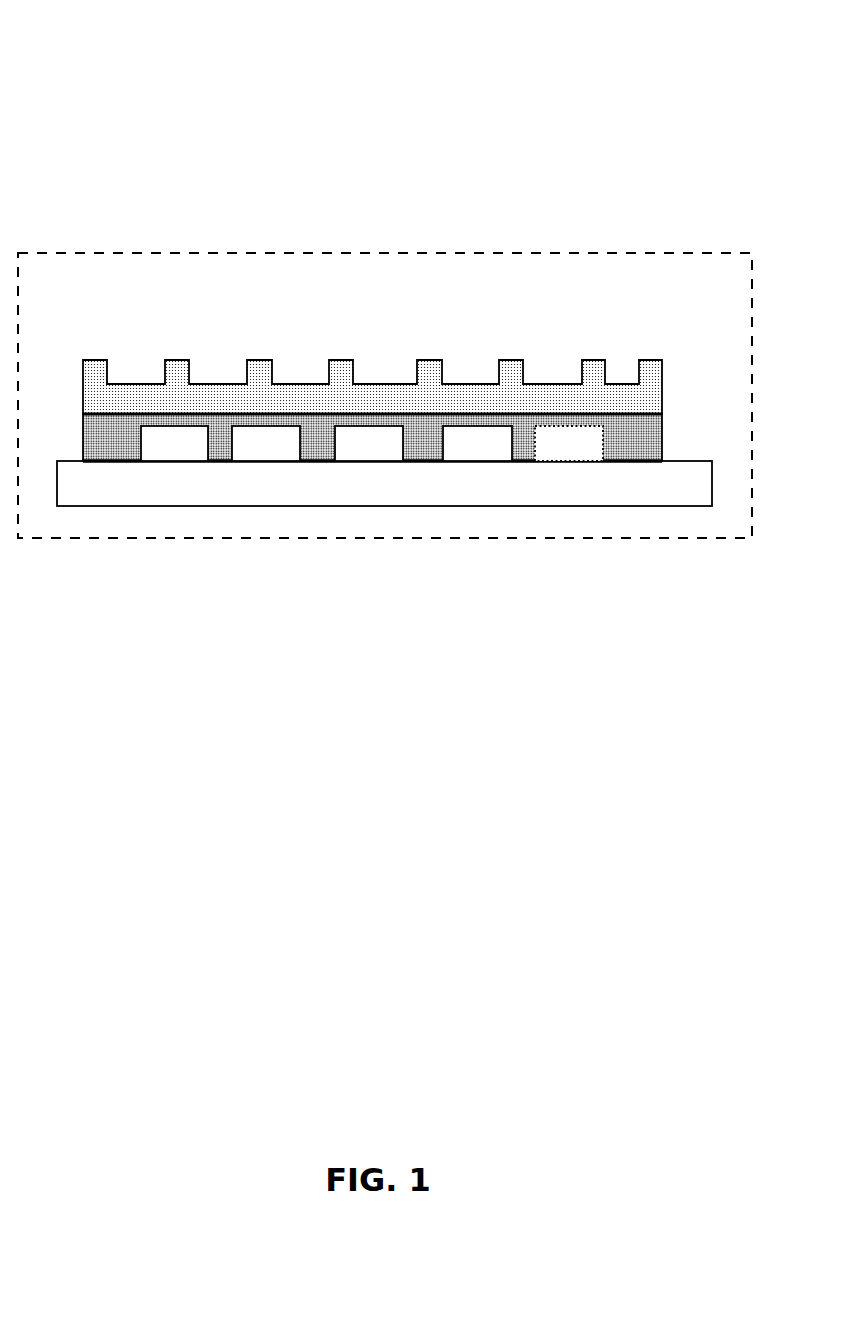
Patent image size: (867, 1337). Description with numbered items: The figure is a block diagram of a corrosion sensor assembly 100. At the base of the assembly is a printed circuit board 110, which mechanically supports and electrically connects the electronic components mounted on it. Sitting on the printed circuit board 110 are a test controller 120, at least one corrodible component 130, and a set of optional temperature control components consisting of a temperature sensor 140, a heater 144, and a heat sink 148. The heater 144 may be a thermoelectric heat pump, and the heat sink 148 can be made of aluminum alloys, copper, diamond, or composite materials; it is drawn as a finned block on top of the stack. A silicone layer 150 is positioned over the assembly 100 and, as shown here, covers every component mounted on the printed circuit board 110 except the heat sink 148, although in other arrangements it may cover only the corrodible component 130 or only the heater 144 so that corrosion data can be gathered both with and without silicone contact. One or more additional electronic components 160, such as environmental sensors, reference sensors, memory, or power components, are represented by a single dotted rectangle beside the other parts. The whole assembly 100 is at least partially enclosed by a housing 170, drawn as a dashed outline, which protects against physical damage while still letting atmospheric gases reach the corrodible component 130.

The corrosion sensor assembly 100 is at (116, 86).
The printed circuit board 110 is at (384, 483).
The test controller 120 is at (174, 443).
The corrodible component 130 is at (266, 443).
The temperature sensor 140 is at (369, 443).
The heater 144 is at (477, 443).
The heat sink 148 is at (647, 358).
The silicone layer 150 is at (665, 431).
The additional electronic components 160 is at (569, 443).
The housing 170 is at (505, 541).